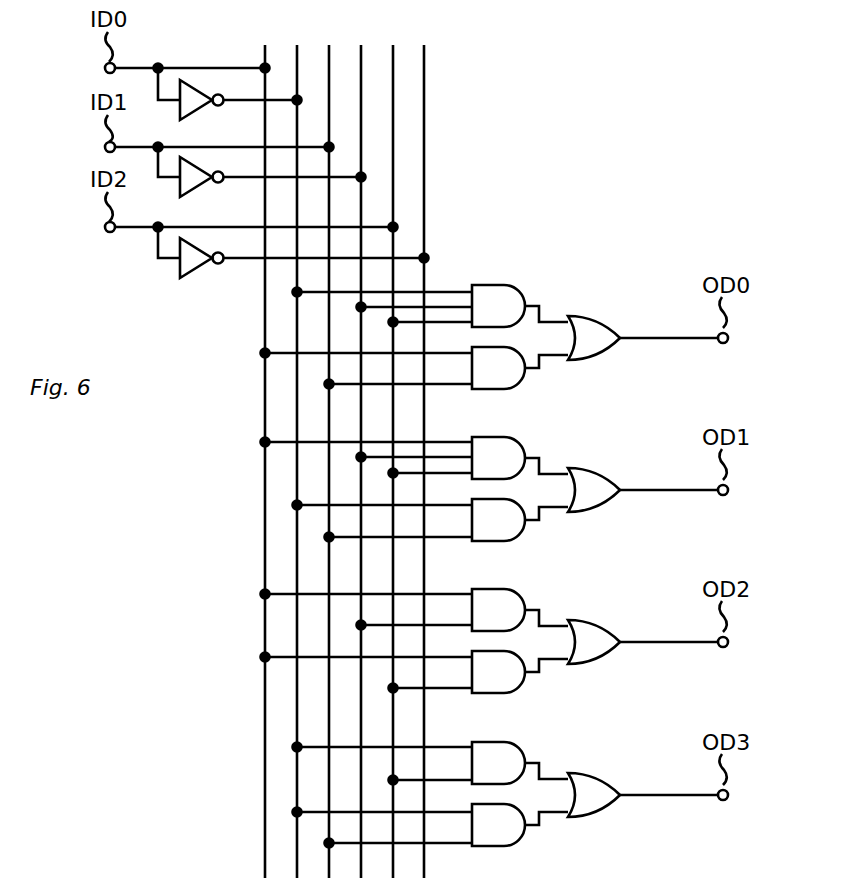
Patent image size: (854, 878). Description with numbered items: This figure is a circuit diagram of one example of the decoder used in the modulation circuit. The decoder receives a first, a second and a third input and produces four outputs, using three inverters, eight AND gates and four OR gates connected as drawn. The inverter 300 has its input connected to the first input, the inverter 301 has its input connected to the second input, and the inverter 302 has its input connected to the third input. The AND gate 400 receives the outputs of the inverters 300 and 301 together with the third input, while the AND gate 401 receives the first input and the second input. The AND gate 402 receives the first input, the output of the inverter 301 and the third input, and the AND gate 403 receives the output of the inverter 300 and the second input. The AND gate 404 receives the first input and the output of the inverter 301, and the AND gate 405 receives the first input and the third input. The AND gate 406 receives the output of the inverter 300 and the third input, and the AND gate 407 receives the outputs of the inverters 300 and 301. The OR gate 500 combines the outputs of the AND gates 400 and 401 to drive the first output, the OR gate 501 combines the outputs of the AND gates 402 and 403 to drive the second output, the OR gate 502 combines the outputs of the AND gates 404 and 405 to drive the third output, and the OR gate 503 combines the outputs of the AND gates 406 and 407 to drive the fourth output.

The inverter 300 is at (202, 110).
The inverter 301 is at (202, 187).
The inverter 302 is at (202, 268).
The AND gate 400 is at (524, 298).
The AND gate 401 is at (524, 378).
The AND gate 402 is at (524, 450).
The AND gate 403 is at (524, 530).
The AND gate 404 is at (524, 602).
The AND gate 405 is at (524, 682).
The AND gate 406 is at (524, 755).
The AND gate 407 is at (524, 835).
The OR gate 500 is at (580, 316).
The OR gate 501 is at (580, 468).
The OR gate 502 is at (580, 620).
The OR gate 503 is at (580, 773).